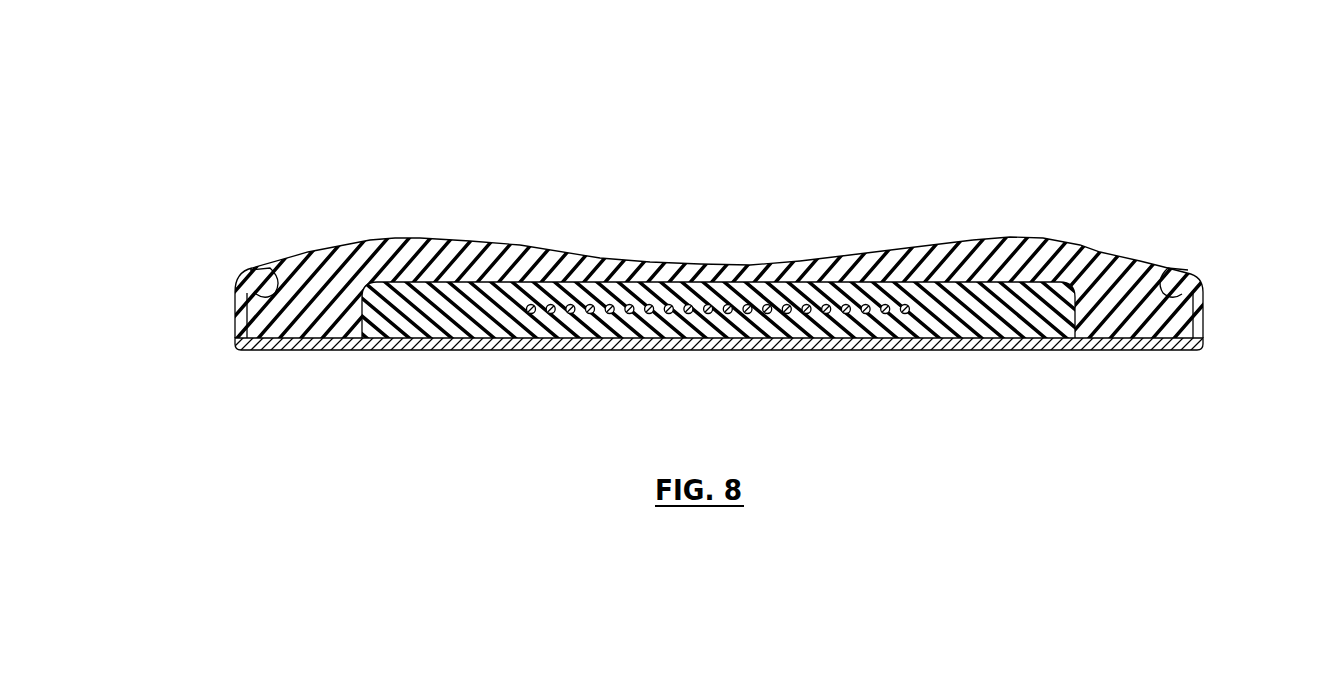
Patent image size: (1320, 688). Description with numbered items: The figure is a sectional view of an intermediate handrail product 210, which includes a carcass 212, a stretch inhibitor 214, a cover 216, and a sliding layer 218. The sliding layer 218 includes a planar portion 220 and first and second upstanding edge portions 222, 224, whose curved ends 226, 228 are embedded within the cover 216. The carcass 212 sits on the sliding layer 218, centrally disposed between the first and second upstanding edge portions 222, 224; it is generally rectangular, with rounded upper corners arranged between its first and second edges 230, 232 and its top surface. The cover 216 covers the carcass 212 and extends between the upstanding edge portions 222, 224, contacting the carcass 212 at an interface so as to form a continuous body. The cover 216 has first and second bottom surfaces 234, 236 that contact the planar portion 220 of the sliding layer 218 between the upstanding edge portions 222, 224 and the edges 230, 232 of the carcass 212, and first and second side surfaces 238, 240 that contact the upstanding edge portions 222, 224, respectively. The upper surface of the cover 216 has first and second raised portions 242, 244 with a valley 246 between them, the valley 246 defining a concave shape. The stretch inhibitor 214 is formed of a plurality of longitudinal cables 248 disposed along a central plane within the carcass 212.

The intermediate handrail product 210 is at (296, 138).
The carcass 212 is at (748, 273).
The stretch inhibitor 214 is at (805, 292).
The cover 216 is at (893, 244).
The sliding layer 218 is at (940, 322).
The planar portion 220 is at (733, 350).
The first upstanding edge portion 222 is at (238, 313).
The second upstanding edge portion 224 is at (1204, 302).
The curved end 226 is at (262, 276).
The curved end 228 is at (1183, 273).
The first edge 230 is at (352, 322).
The second edge 232 is at (1084, 320).
The first bottom surface 234 is at (288, 349).
The second bottom surface 236 is at (1161, 350).
The first side surface 238 is at (232, 297).
The second side surface 240 is at (1212, 321).
The first raised portion 242 is at (394, 229).
The second raised portion 244 is at (1043, 229).
The valley 246 is at (701, 254).
The longitudinal cables 248 is at (612, 303).